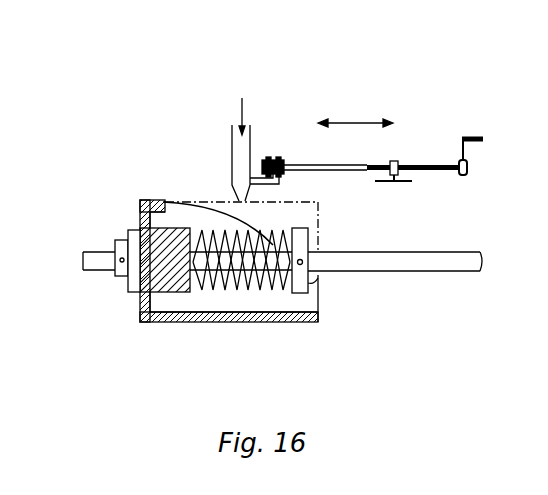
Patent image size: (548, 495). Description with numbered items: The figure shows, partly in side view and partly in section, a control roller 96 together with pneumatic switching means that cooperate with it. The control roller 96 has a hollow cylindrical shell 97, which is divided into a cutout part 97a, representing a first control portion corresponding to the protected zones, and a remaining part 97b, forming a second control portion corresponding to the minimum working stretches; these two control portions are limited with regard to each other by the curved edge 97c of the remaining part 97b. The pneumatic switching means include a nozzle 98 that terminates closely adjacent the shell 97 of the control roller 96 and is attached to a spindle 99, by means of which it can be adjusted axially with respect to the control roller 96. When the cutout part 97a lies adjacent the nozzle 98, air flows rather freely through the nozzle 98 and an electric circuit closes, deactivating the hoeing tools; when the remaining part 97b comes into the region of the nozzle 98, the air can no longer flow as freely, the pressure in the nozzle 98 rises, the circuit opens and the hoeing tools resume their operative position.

The control roller 96 is at (139, 206).
The hollow cylindrical shell 97 is at (303, 323).
The cutout part 97a is at (339, 226).
The remaining part 97b is at (186, 325).
The curved edge 97c is at (215, 203).
The nozzle 98 is at (231, 146).
The spindle 99 is at (336, 165).